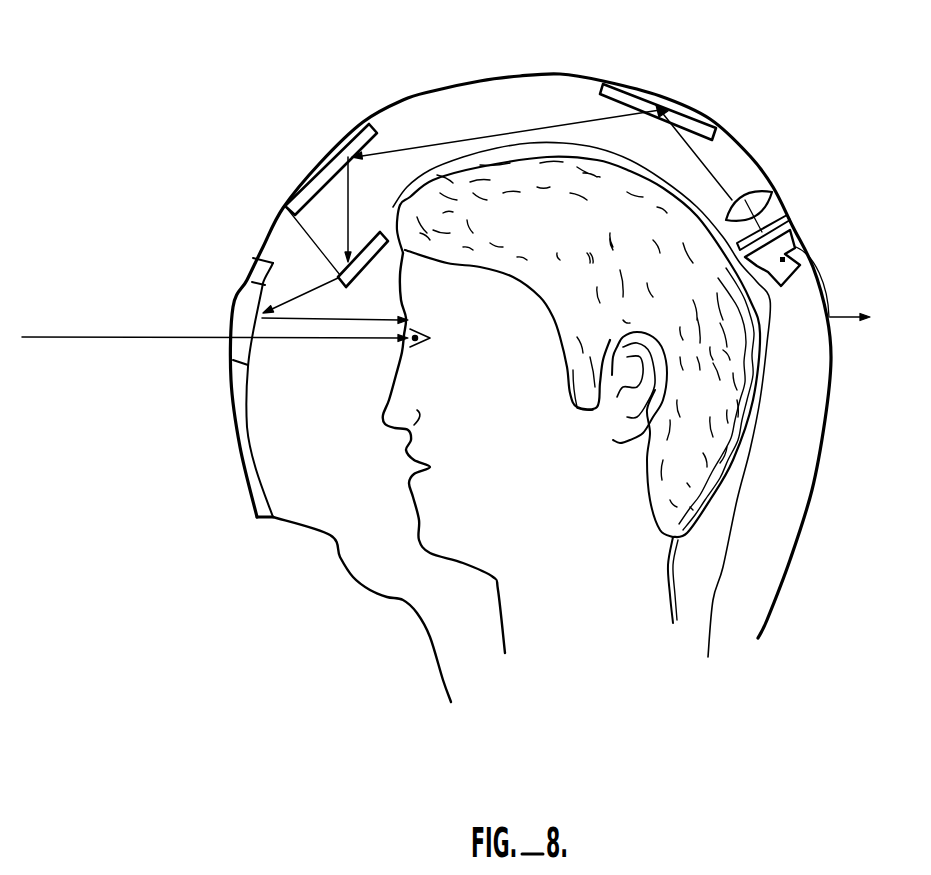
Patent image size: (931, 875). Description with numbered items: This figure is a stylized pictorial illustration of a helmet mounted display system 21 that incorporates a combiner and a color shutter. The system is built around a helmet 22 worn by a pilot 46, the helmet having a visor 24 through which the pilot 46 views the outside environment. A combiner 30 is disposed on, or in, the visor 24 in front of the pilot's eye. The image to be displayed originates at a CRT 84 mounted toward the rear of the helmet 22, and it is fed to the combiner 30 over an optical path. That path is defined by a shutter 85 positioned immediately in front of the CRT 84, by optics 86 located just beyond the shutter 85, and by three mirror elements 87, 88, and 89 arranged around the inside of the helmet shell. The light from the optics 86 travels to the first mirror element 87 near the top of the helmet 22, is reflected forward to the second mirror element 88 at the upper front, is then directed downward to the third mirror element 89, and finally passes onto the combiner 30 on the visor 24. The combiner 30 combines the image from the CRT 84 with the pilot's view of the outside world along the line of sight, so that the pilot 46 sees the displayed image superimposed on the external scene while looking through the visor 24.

The helmet mounted display system 21 is at (596, 58).
The helmet 22 is at (793, 557).
The visor 24 is at (240, 463).
The combiner 30 is at (240, 307).
The pilot 46 is at (493, 577).
The CRT 84 is at (800, 245).
The shutter 85 is at (787, 217).
The optics 86 is at (763, 186).
The mirror element 87 is at (673, 110).
The mirror element 88 is at (353, 135).
The mirror element 89 is at (365, 246).